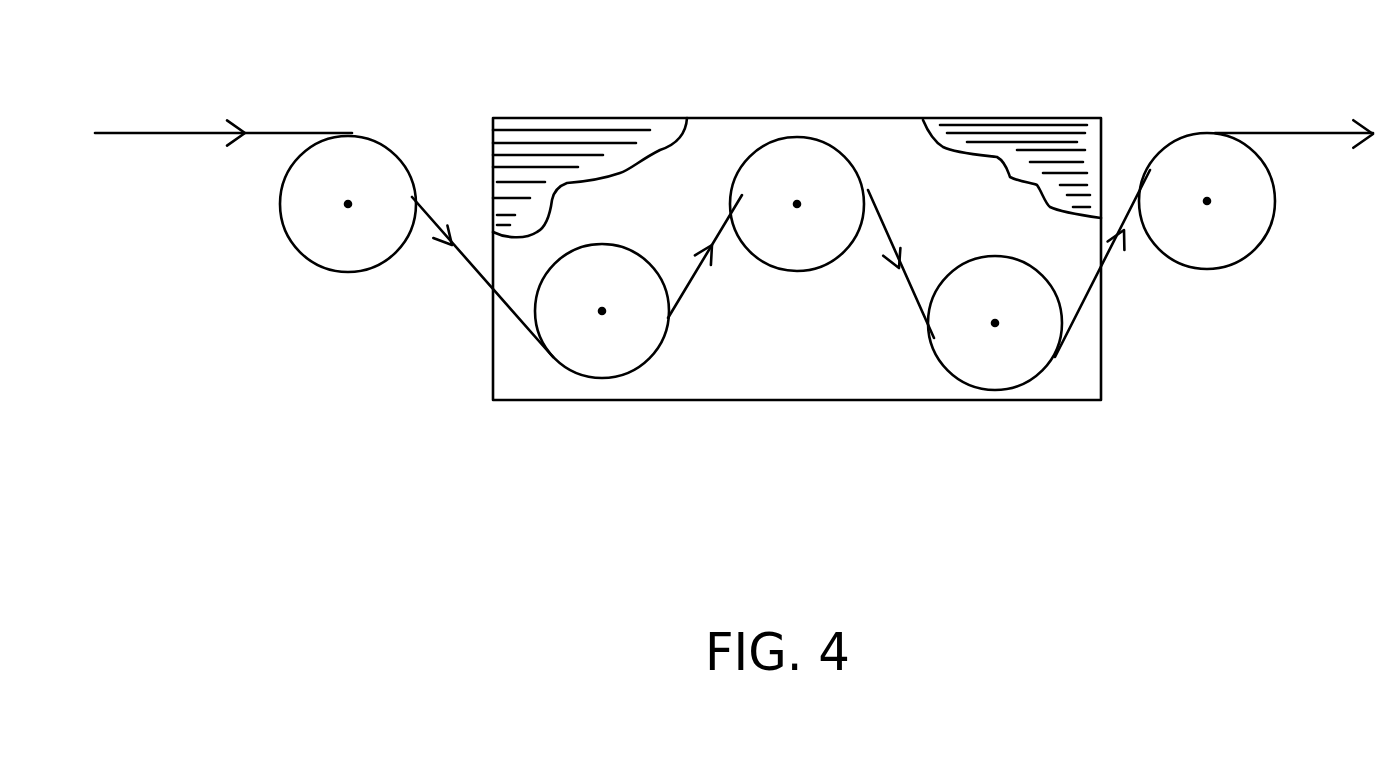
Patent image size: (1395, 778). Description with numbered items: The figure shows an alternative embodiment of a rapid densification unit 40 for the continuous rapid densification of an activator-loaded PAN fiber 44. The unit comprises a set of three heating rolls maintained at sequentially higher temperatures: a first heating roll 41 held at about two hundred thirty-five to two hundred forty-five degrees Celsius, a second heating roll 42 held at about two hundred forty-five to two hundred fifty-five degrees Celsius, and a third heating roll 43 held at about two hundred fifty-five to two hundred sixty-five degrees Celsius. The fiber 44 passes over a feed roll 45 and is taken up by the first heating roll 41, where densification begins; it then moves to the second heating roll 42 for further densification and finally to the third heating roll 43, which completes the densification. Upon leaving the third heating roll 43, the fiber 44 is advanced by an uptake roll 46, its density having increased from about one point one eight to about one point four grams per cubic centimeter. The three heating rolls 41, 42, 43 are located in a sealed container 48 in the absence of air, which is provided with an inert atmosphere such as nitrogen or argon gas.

The rapid densification unit 40 is at (797, 302).
The first heating roll 41 is at (602, 382).
The second heating roll 42 is at (800, 122).
The third heating roll 43 is at (966, 382).
The activator-loaded PAN fiber 44 is at (164, 150).
The feed roll 45 is at (348, 275).
The uptake roll 46 is at (1212, 272).
The sealed container 48 is at (624, 103).